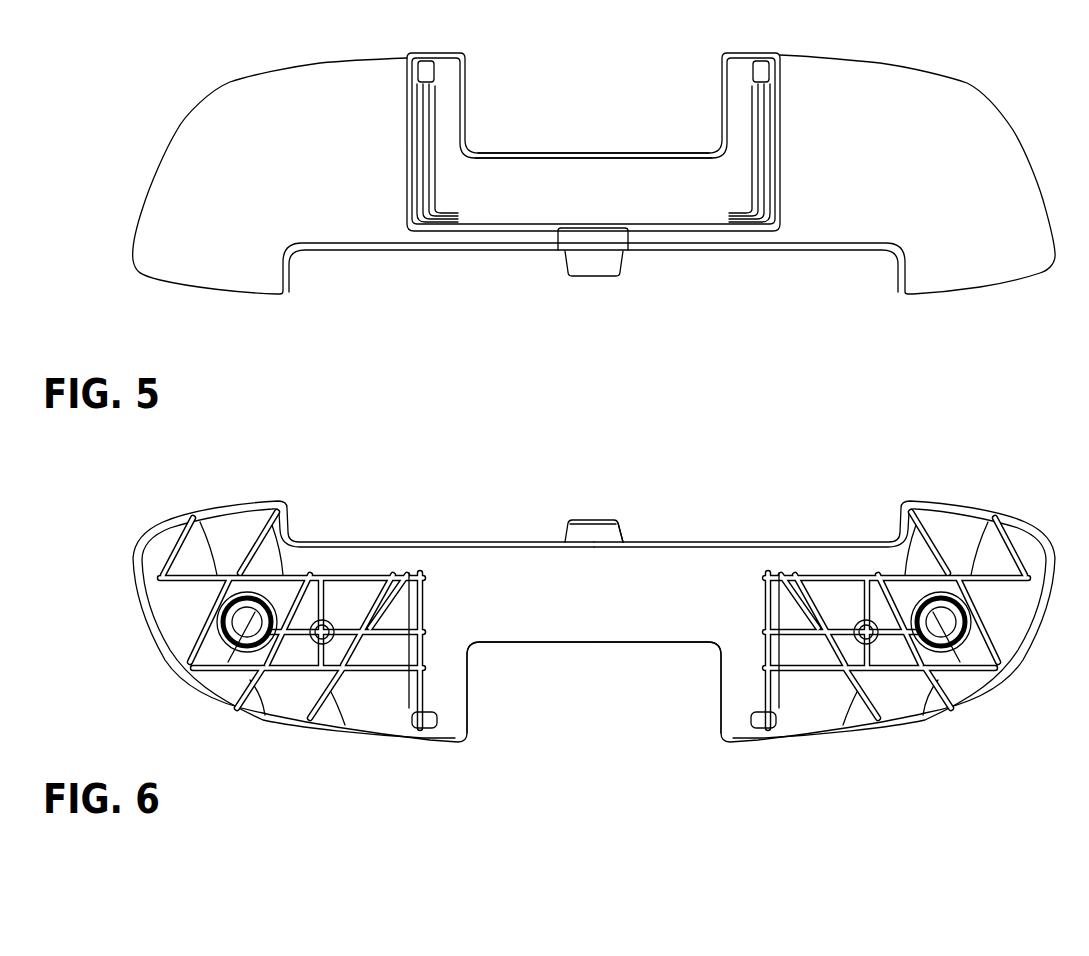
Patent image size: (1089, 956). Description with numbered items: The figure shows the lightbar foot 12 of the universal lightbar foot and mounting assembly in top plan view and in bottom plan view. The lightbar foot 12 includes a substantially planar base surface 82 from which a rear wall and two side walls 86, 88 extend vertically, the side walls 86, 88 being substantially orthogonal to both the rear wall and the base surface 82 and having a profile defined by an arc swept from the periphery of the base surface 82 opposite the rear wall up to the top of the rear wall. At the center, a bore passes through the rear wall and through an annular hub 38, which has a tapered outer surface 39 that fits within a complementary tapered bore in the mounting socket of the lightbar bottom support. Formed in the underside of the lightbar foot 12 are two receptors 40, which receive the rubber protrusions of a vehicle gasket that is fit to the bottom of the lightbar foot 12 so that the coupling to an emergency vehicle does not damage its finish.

In FIG. 5, the lightbar foot 12 is at (168, 129).
In FIG. 6, the lightbar foot 12 is at (130, 592).
In FIG. 5, the annular hub 38 is at (567, 256).
In FIG. 6, the annular hub 38 is at (580, 530).
In FIG. 6, the tapered outer surface 39 is at (620, 528).
In FIG. 6, the receptors 40 is at (252, 615).
In FIG. 5, the base surface 82 is at (582, 150).
In FIG. 6, the base surface 82 is at (536, 645).
In FIG. 5, the side wall 86 is at (762, 142).
In FIG. 5, the side wall 88 is at (430, 140).